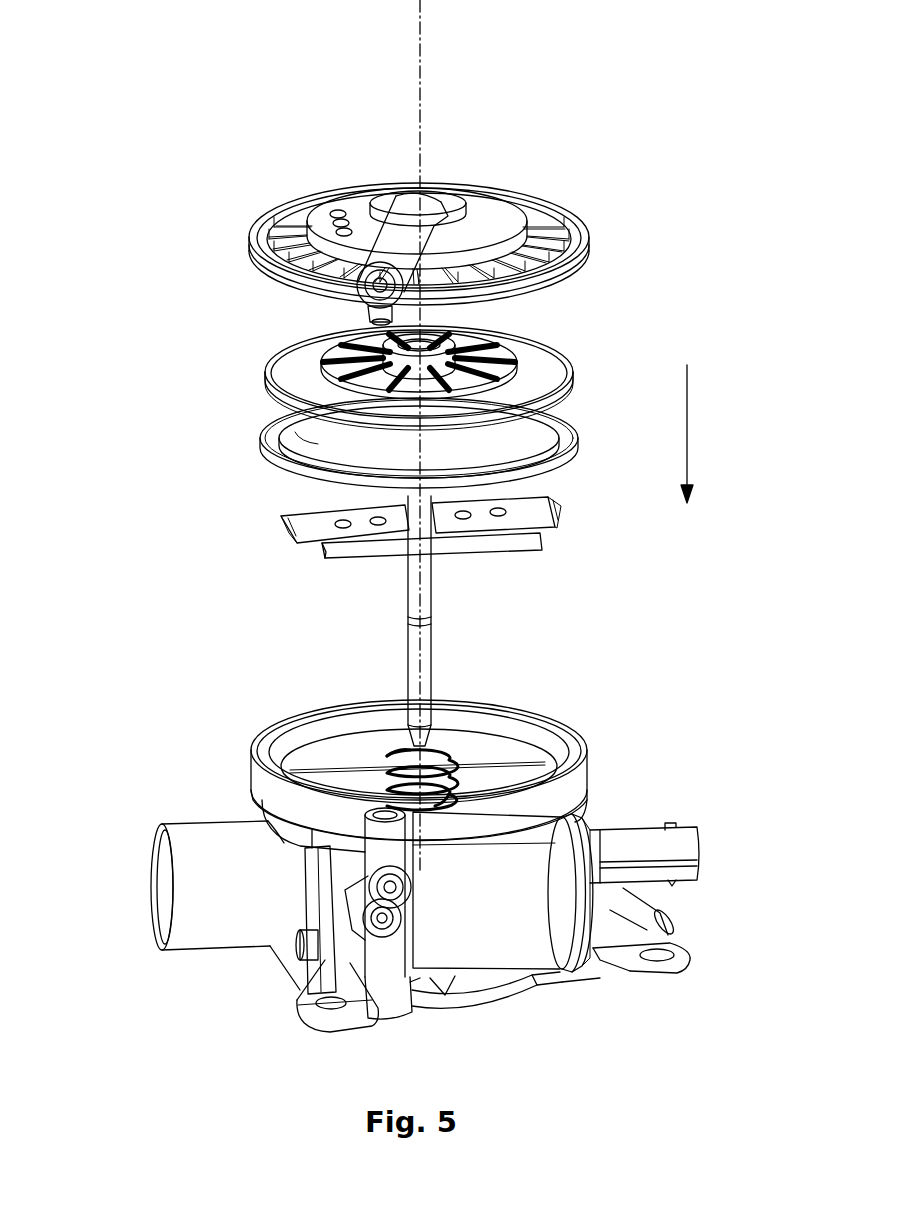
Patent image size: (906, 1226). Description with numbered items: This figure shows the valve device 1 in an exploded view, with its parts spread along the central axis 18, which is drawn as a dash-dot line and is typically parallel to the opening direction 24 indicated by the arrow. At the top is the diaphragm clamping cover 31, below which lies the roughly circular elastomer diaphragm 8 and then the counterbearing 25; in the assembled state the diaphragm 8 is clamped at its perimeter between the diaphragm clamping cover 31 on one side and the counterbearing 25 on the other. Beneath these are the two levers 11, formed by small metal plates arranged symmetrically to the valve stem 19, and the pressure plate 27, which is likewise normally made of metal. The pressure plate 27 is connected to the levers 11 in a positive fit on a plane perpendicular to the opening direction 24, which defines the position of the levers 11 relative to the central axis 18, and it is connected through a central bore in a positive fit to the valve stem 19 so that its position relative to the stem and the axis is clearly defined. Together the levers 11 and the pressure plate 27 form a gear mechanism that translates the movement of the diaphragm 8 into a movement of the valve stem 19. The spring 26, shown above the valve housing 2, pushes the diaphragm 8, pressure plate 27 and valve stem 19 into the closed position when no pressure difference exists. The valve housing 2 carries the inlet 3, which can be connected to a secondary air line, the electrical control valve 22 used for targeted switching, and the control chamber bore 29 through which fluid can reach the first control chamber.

The valve device 1 is at (265, 128).
The valve housing 2 is at (515, 725).
The inlet 3 is at (165, 890).
The diaphragm 8 is at (547, 396).
The levers 11 is at (324, 520).
The central axis 18 is at (421, 70).
The valve stem 19 is at (427, 660).
The electrical control valve 22 is at (527, 944).
The opening direction 24 is at (688, 440).
The counterbearing 25 is at (290, 447).
The spring 26 is at (392, 758).
The pressure plate 27 is at (532, 548).
The control chamber bore 29 is at (378, 812).
The diaphragm clamping cover 31 is at (492, 200).